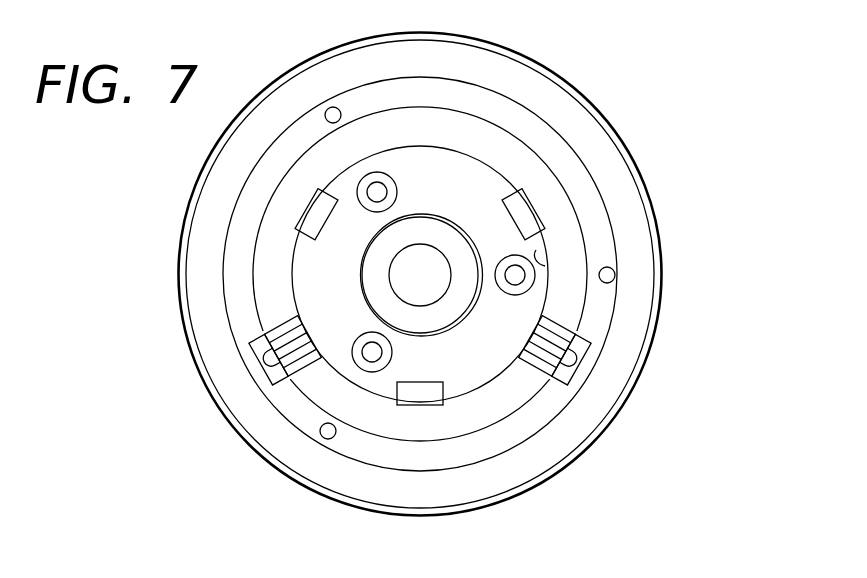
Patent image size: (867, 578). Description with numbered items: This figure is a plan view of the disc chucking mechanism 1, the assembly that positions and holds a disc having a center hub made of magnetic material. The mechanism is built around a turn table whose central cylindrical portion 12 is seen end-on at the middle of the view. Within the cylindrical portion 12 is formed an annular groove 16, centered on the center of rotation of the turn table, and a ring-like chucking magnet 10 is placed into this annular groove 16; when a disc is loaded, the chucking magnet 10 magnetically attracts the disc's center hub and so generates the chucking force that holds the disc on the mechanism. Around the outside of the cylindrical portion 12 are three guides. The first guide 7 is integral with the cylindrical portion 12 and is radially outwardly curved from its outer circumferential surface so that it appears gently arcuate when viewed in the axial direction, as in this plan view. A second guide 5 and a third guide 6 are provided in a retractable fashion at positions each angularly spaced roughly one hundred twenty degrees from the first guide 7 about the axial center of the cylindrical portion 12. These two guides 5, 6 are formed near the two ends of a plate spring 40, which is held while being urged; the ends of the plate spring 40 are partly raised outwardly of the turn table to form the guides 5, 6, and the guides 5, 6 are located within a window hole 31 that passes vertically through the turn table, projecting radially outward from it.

The disc chucking mechanism 1 is at (680, 138).
The second guide 5 is at (278, 345).
The third guide 6 is at (577, 360).
The first guide 7 is at (462, 109).
The chucking magnet 10 is at (490, 182).
The cylindrical portion 12 is at (587, 308).
The annular groove 16 is at (540, 258).
The window hole 31 is at (262, 351).
The plate spring 40 is at (290, 360).